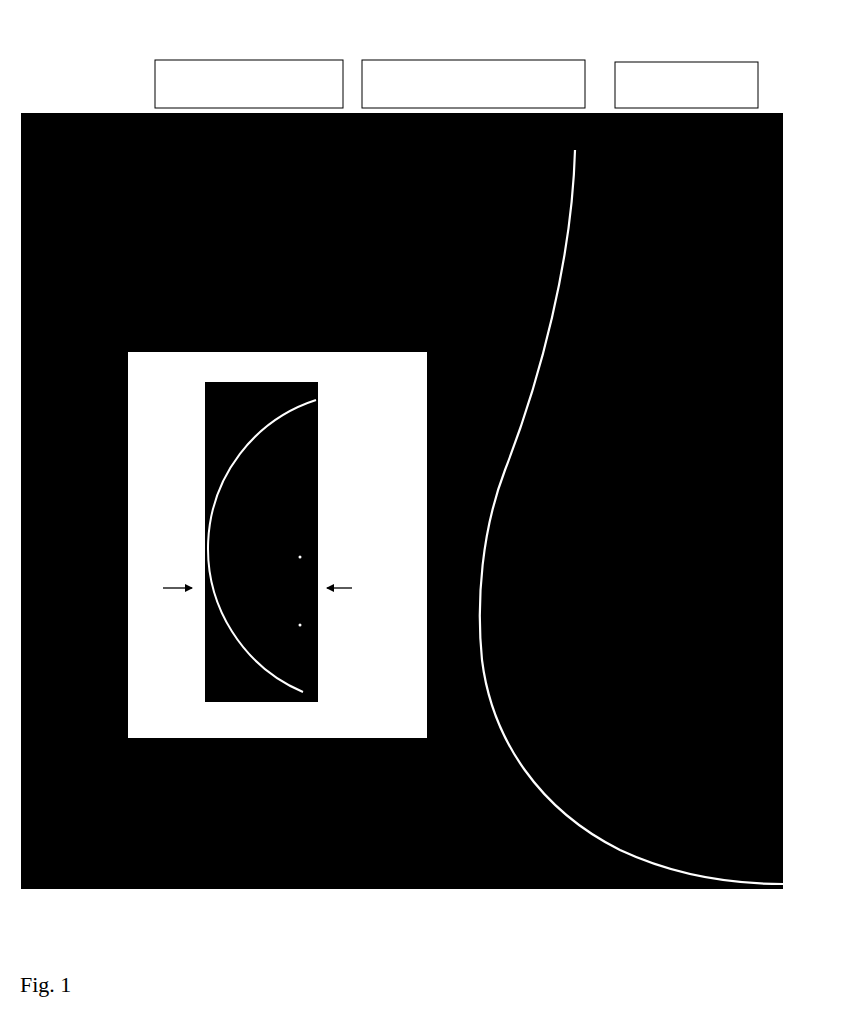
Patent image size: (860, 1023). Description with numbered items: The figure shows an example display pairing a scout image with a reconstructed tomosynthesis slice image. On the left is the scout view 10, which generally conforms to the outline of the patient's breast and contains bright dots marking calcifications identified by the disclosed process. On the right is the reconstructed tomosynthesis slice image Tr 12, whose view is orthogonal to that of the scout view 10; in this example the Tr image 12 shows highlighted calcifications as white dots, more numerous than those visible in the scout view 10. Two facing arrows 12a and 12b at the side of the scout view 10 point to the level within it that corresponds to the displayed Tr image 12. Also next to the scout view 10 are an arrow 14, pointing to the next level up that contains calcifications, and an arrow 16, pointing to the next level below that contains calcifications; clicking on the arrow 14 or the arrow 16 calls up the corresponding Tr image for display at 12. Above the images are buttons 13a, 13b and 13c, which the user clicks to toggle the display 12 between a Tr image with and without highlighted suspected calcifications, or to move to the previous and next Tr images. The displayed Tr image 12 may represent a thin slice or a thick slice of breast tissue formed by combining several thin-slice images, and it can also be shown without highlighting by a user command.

The scout view 10 is at (327, 445).
The reconstructed tomosynthesis slice image Tr 12 is at (757, 463).
The facing arrow 12a is at (155, 582).
The facing arrow 12b is at (347, 582).
The button 13a is at (238, 52).
The button 13b is at (455, 52).
The button 13c is at (688, 52).
The arrow 14 is at (357, 557).
The arrow 16 is at (328, 624).